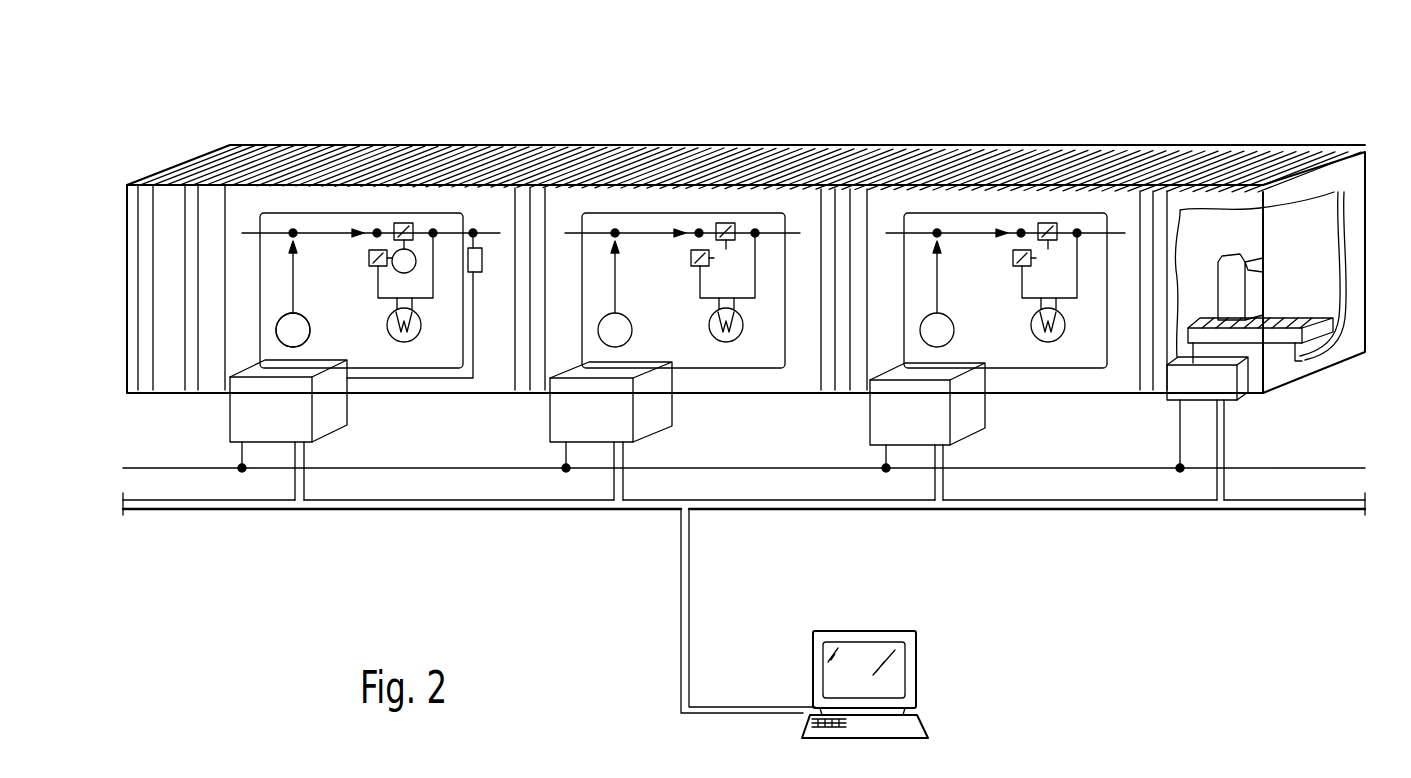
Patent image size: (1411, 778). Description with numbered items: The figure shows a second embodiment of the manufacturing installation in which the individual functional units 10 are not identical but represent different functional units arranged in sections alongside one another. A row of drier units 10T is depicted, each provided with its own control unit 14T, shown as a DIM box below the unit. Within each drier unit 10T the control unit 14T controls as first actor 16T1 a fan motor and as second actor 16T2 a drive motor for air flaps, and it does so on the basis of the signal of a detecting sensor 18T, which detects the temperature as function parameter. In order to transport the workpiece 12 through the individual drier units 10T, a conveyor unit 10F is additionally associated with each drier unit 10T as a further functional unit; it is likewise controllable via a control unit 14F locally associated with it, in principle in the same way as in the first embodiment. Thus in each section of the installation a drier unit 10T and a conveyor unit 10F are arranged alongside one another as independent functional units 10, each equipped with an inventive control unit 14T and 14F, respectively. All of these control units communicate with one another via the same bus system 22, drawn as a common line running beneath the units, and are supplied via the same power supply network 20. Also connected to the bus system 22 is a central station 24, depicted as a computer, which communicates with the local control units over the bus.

The drier unit 10T is at (388, 138).
The second actor (drive motor for air flaps) 16T2 is at (417, 259).
The detecting sensor 18T is at (483, 252).
The first actor (fan motor) 16T1 is at (310, 330).
The control unit 14T is at (237, 393).
The control unit 14F is at (1172, 400).
The conveyor unit 10F is at (1283, 367).
The functional unit 10 is at (1293, 338).
The workpiece 12 is at (1262, 298).
The power supply network 20 is at (682, 468).
The bus system 22 is at (522, 510).
The central station 24 is at (917, 663).